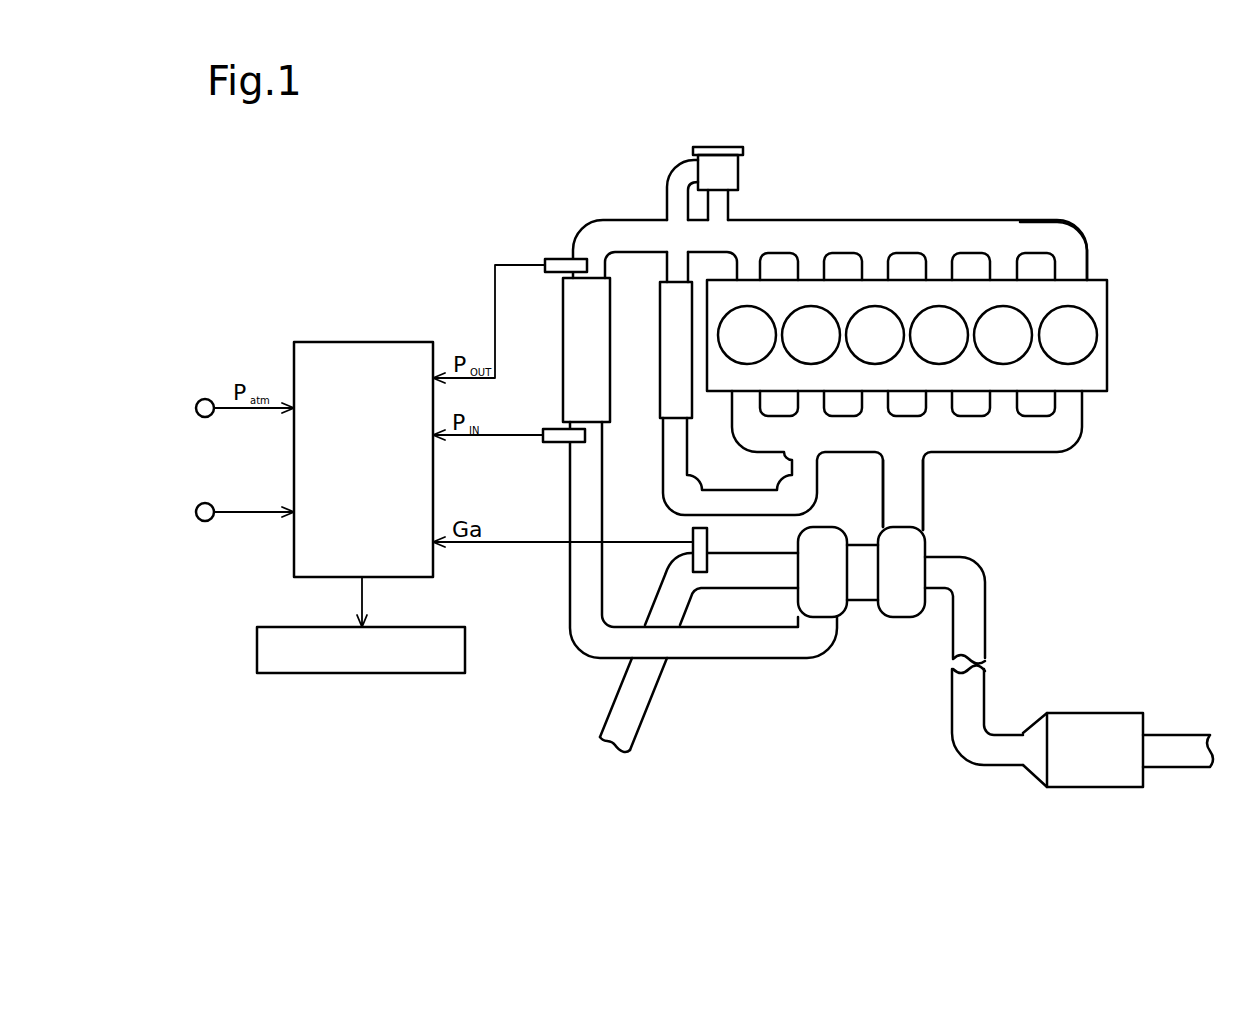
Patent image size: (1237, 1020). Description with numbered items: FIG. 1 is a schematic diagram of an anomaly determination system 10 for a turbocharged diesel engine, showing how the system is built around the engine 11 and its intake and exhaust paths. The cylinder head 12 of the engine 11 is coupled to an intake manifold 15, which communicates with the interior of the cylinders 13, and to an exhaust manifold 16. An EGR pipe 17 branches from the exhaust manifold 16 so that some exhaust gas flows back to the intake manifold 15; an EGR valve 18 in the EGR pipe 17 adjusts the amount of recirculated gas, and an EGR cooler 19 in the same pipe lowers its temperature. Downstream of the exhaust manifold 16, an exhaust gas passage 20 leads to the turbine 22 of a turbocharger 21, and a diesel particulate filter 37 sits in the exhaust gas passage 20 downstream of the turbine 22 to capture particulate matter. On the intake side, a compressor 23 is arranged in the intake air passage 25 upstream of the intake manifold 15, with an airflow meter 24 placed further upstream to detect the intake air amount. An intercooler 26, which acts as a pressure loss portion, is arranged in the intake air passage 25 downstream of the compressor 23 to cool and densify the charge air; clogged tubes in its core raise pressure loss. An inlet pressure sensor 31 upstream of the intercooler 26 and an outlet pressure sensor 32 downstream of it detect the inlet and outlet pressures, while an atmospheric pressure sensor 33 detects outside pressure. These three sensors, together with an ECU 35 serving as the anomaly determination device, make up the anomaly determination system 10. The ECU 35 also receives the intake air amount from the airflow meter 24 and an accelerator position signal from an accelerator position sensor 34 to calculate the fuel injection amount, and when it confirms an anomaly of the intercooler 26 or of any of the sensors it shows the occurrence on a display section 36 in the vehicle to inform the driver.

The anomaly determination system 10 is at (335, 268).
The engine 11 is at (928, 287).
The cylinder head 12 is at (928, 330).
The cylinders 13 is at (1094, 310).
The intake manifold 15 is at (1030, 222).
The exhaust manifold 16 is at (1023, 452).
The EGR pipe 17 is at (663, 458).
The EGR valve 18 is at (715, 147).
The EGR cooler 19 is at (662, 330).
The exhaust gas passage 20 is at (923, 487).
The turbocharger 21 is at (861, 578).
The turbine 22 is at (903, 618).
The compressor 23 is at (822, 620).
The airflow meter 24 is at (693, 549).
The intake air passage 25 is at (631, 222).
The intercooler 26 is at (563, 362).
The inlet pressure sensor 31 is at (553, 442).
The outlet pressure sensor 32 is at (556, 259).
The atmospheric pressure sensor 33 is at (205, 399).
The accelerator position sensor 34 is at (205, 503).
The ECU 35 is at (314, 342).
The display section 36 is at (257, 651).
The diesel particulate filter 37 is at (1115, 713).